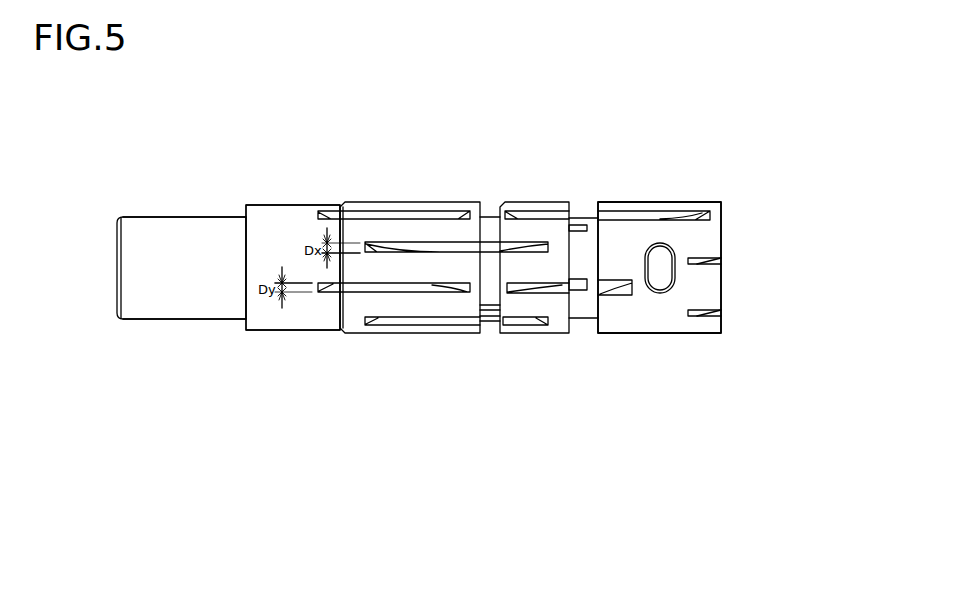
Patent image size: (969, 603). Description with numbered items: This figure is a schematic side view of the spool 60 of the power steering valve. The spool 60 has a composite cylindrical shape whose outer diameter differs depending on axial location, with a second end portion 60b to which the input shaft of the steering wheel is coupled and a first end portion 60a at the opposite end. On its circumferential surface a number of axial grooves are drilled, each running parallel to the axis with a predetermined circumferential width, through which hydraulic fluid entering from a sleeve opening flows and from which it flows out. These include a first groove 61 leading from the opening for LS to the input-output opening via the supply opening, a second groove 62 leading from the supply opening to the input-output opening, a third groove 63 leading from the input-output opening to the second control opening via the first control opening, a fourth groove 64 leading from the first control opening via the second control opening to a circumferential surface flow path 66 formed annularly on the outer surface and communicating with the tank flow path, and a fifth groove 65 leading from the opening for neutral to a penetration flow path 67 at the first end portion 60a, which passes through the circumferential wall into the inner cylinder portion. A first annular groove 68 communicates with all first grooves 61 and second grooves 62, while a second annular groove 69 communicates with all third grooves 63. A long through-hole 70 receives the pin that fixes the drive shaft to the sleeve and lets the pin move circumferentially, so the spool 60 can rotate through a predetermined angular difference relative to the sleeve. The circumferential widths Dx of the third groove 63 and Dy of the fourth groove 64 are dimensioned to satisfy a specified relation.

The spool 60 is at (715, 158).
The first end portion 60a is at (732, 205).
The second end portion 60b is at (120, 203).
The first groove 61 is at (715, 202).
The second groove 62 is at (503, 282).
The third groove 63 is at (470, 243).
The fourth groove 64 is at (368, 215).
The fifth groove 65 is at (707, 262).
The circumferential surface flow path 66 is at (295, 333).
The penetration flow path 67 is at (728, 260).
The first annular groove 68 is at (583, 329).
The second annular groove 69 is at (490, 330).
The through-hole 70 is at (662, 272).